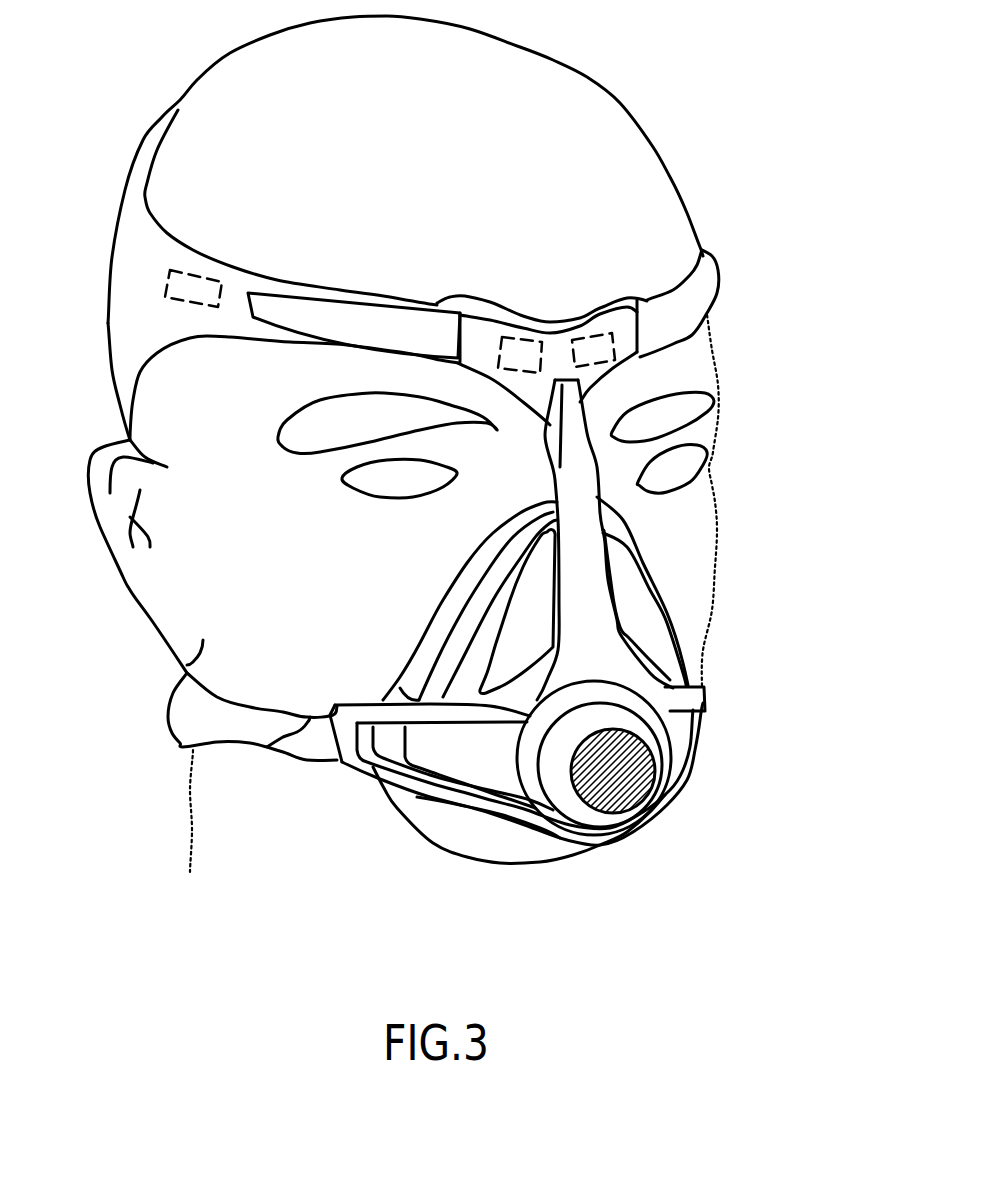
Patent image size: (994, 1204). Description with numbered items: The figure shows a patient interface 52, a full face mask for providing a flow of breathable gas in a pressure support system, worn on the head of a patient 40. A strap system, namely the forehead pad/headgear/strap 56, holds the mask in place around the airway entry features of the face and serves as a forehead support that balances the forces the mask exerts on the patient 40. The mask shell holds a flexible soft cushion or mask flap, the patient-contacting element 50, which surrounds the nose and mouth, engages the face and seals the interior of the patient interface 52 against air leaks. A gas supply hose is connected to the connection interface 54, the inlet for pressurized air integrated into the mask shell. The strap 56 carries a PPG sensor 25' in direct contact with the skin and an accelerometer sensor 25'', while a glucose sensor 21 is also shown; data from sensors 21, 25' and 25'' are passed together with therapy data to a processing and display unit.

The patient 40 is at (598, 68).
The forehead pad/headgear/strap 56 is at (728, 258).
The glucose sensor 21 is at (193, 268).
The PPG sensor 25' is at (520, 314).
The accelerometer sensor 25'' is at (593, 311).
The patient-contacting element 50 is at (467, 582).
The patient interface 52 is at (724, 680).
The connection interface 54 is at (620, 787).